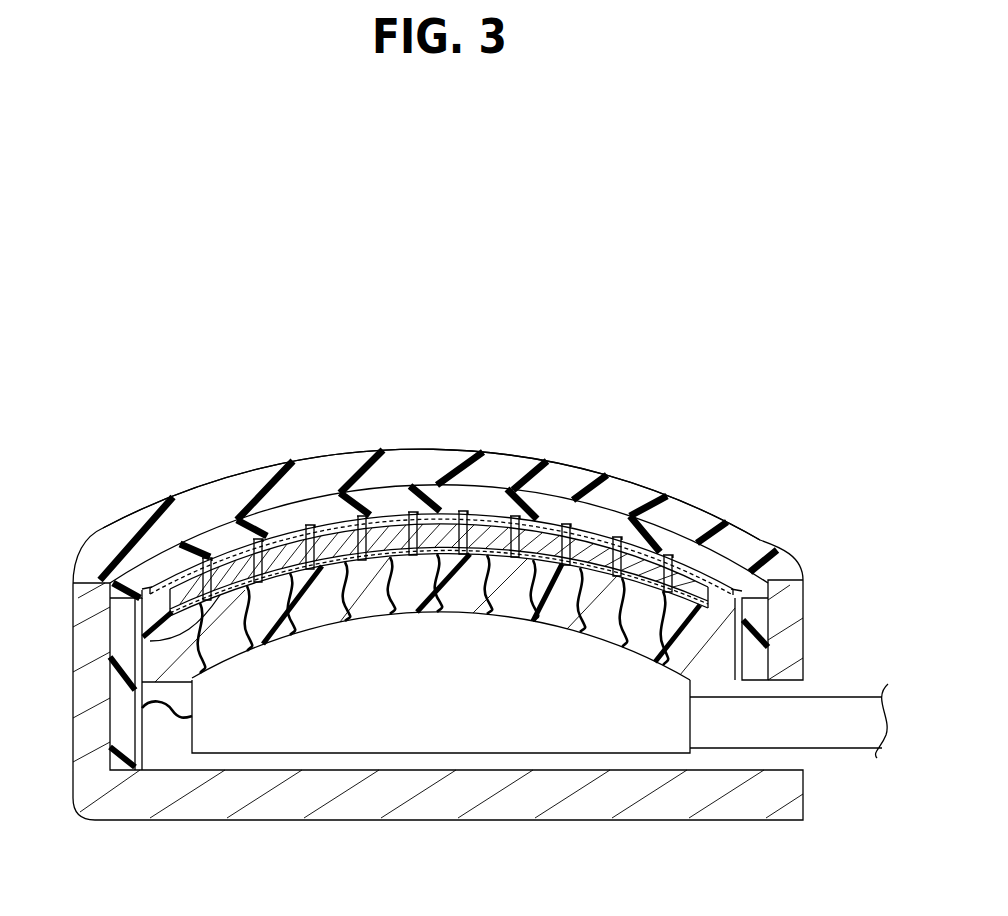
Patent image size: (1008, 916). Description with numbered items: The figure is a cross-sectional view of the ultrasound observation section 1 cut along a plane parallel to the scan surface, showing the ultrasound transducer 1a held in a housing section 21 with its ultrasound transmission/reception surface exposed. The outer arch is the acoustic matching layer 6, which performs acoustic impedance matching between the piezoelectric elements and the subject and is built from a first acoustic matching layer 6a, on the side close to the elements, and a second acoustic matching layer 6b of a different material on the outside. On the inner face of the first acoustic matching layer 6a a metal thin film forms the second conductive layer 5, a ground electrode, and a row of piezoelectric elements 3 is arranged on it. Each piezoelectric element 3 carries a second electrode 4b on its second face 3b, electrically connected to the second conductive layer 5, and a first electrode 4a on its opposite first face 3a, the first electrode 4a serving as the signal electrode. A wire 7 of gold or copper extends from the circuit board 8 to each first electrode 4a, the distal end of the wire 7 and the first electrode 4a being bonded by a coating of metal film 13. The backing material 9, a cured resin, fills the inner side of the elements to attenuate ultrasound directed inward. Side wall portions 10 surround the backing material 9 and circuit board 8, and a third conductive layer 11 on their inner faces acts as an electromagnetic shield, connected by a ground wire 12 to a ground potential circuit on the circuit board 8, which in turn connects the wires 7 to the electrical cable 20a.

The ultrasound transducer 1a is at (129, 408).
The ultrasound observation section 1 is at (487, 820).
The piezoelectric element 3 is at (228, 568).
The first face 3a is at (298, 628).
The second face 3b is at (285, 545).
The first electrode 4a is at (215, 562).
The second electrode 4b is at (235, 580).
The second conductive layer 5 is at (165, 583).
The acoustic matching layer 6 is at (347, 383).
The first acoustic matching layer 6a is at (311, 508).
The second acoustic matching layer 6b is at (338, 472).
The wire 7 is at (275, 603).
The circuit board 8 is at (584, 750).
The backing material 9 is at (374, 610).
The side wall portion 10 is at (117, 725).
The third conductive layer 11 is at (143, 752).
The ground wire 12 is at (173, 718).
The metal film 13 is at (150, 641).
The electrical cable 20a is at (843, 697).
The housing section 21 is at (737, 818).